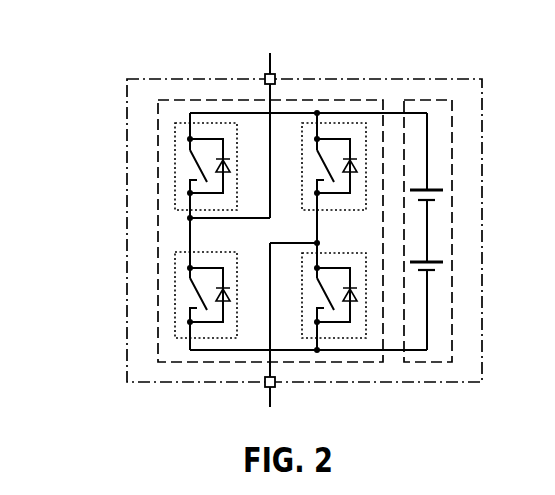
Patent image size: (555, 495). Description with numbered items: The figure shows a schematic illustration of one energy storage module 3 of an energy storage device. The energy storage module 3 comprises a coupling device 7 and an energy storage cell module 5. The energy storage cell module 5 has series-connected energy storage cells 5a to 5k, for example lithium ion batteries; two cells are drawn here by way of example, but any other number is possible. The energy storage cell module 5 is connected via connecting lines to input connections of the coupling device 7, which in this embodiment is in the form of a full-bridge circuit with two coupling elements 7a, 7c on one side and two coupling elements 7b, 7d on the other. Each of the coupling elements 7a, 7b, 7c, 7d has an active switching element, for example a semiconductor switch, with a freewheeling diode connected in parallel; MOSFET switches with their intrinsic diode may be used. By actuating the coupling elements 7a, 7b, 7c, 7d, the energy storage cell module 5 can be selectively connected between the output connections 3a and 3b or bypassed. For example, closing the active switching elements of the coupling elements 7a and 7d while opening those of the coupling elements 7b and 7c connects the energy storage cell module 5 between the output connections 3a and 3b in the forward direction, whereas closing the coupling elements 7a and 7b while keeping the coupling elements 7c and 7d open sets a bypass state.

The energy storage module 3 is at (180, 77).
The output connection 3a is at (276, 77).
The output connection 3b is at (276, 384).
The coupling device 7 is at (158, 117).
The coupling element 7a is at (177, 167).
The coupling element 7b is at (345, 122).
The coupling element 7c is at (177, 305).
The coupling element 7d is at (345, 340).
The energy storage cell module 5 is at (452, 126).
The energy storage cell 5a is at (438, 196).
The energy storage cell 5k is at (438, 267).